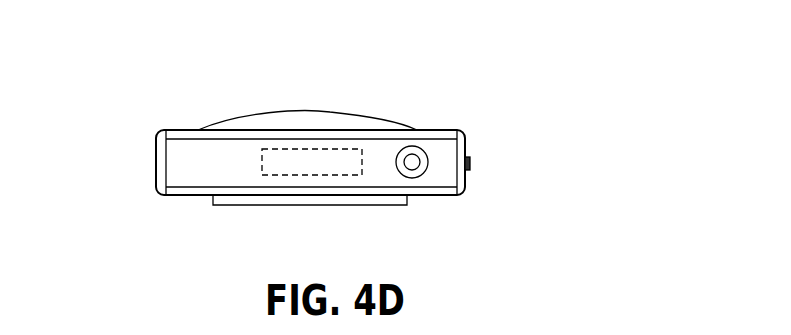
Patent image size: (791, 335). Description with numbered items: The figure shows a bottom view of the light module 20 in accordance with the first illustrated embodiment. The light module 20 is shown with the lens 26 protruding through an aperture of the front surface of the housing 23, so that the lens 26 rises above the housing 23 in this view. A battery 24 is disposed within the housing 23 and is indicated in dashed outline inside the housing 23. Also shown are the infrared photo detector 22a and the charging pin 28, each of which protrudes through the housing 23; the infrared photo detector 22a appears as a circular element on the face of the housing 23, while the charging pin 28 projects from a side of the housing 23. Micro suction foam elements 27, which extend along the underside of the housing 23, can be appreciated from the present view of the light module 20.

The light module 20 is at (484, 268).
The infrared photo detector 22a is at (414, 162).
The housing 23 is at (156, 163).
The battery 24 is at (322, 177).
The lens 26 is at (320, 120).
The micro suction foam elements 27 is at (292, 203).
The charging pin 28 is at (470, 162).